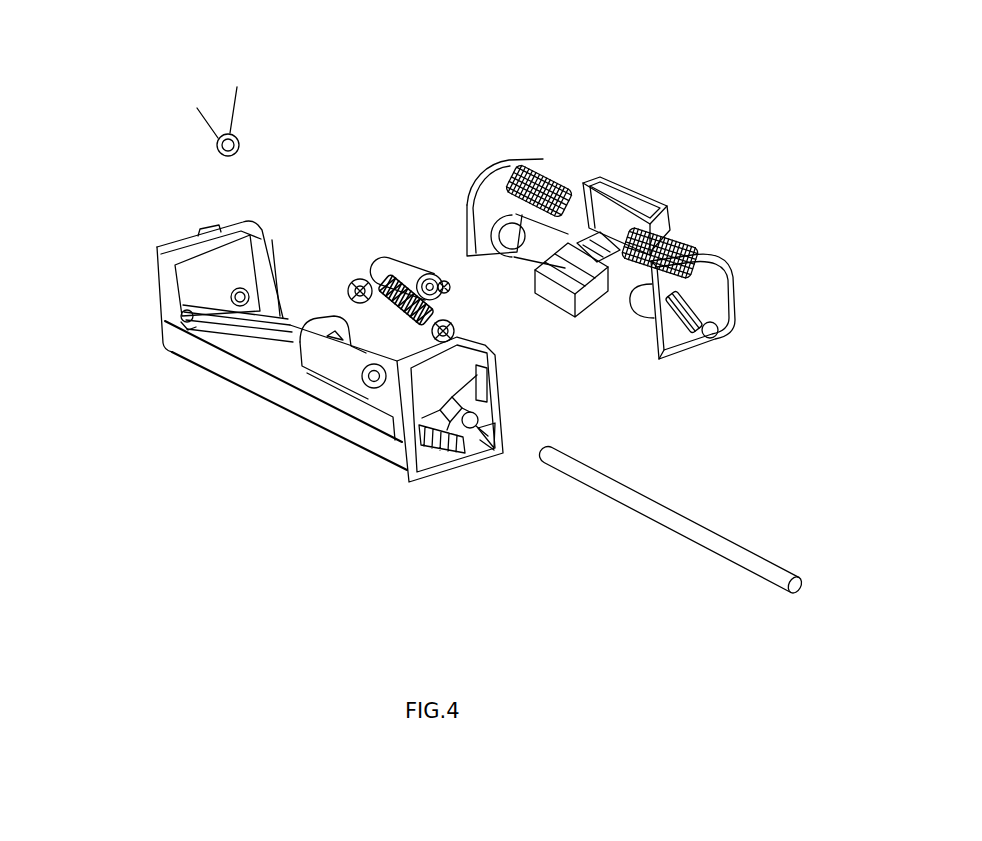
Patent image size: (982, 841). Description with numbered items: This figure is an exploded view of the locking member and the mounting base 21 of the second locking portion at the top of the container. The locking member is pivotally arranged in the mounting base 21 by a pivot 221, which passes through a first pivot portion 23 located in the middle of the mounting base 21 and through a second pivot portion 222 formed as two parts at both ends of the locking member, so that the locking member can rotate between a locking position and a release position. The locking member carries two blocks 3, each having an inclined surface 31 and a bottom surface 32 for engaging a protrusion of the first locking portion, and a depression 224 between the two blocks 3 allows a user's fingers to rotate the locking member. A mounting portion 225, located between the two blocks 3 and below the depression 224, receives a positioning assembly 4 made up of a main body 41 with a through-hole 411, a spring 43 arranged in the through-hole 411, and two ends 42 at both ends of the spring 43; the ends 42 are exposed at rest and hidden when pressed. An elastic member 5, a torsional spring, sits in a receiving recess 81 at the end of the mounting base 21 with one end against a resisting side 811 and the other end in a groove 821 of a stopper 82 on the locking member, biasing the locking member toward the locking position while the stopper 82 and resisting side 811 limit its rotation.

The block 3 is at (550, 177).
The positioning assembly 4 is at (399, 431).
The elastic member 5 is at (243, 143).
The mounting base 21 is at (262, 347).
The first pivot portion 23 is at (323, 347).
The inclined surface 31 is at (538, 165).
The bottom surface 32 is at (570, 190).
The main body 41 is at (399, 416).
The end 42 is at (352, 280).
The spring 43 is at (410, 312).
The receiving recess 81 is at (209, 263).
The stopper 82 is at (742, 308).
The pivot 221 is at (687, 533).
The second pivot portion 222 is at (693, 165).
The depression 224 is at (668, 204).
The mounting portion 225 is at (578, 270).
The through-hole 411 is at (400, 271).
The resisting side 811 is at (247, 265).
The groove 821 is at (690, 300).